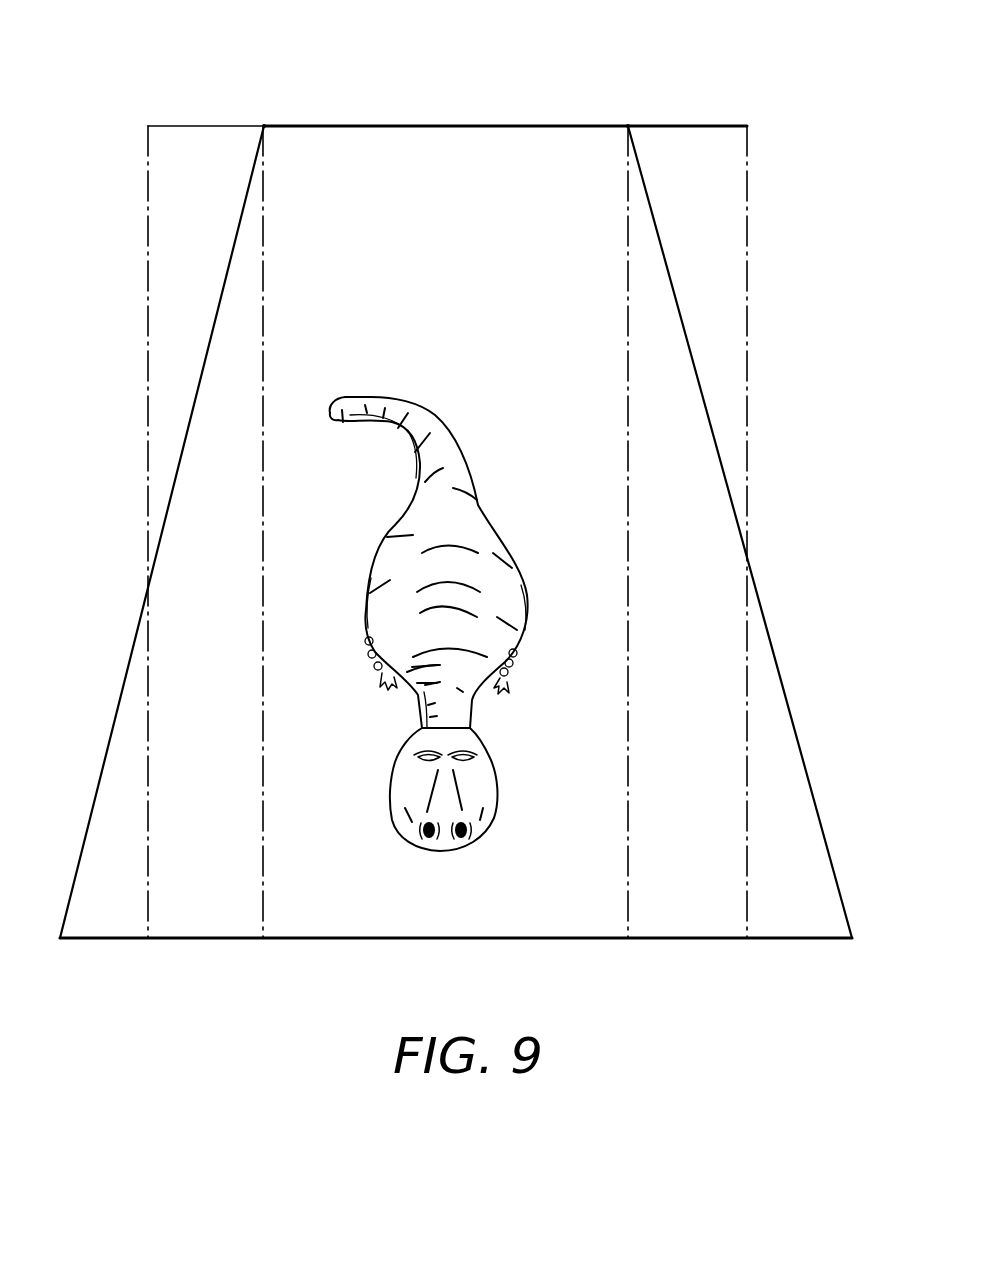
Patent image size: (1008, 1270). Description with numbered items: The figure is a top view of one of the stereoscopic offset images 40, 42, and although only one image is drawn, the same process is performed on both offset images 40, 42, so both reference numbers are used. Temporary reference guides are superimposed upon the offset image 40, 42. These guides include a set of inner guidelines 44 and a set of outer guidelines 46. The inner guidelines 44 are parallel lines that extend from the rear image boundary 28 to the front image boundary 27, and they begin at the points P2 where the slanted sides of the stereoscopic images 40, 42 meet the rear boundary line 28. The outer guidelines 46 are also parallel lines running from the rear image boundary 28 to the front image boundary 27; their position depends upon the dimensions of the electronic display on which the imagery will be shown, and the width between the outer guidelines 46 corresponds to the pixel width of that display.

The front image boundary 27 is at (593, 939).
The rear image boundary 28 is at (440, 126).
The offset image 40 is at (770, 637).
The offset image 42 is at (162, 532).
The inner guidelines 44 is at (263, 348).
The outer guidelines 46 is at (148, 347).
The points P2 is at (264, 126).